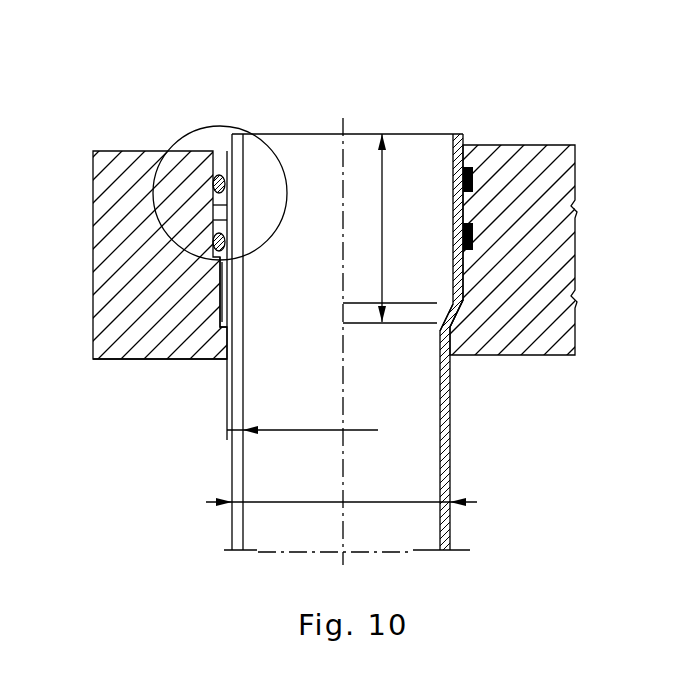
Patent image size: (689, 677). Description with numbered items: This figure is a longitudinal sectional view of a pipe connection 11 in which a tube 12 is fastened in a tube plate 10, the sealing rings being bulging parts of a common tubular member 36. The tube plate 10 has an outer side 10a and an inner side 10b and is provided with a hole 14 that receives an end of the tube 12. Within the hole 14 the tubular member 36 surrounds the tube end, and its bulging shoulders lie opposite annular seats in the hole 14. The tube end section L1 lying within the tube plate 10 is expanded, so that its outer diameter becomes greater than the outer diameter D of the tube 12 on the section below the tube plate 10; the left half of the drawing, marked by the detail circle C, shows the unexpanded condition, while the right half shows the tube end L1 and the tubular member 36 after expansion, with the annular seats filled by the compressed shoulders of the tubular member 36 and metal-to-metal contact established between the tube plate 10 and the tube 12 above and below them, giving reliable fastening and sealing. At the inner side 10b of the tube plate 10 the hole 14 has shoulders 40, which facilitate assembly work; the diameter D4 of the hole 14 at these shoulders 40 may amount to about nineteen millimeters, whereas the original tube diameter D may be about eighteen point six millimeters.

The tube plate 10 is at (567, 144).
The outer side of the tube plate 10a is at (133, 149).
The inner side of the tube plate 10b is at (137, 361).
The pipe connection 11 is at (203, 388).
The tube 12 is at (423, 483).
The hole 14 is at (218, 278).
The tubular member 36 is at (213, 210).
The shoulders 40 is at (500, 354).
The detail circle C is at (177, 141).
The tube end section L1 is at (384, 230).
The diameter of the shoulders of the hole D4 is at (302, 417).
The outer diameter of the tube D is at (341, 488).